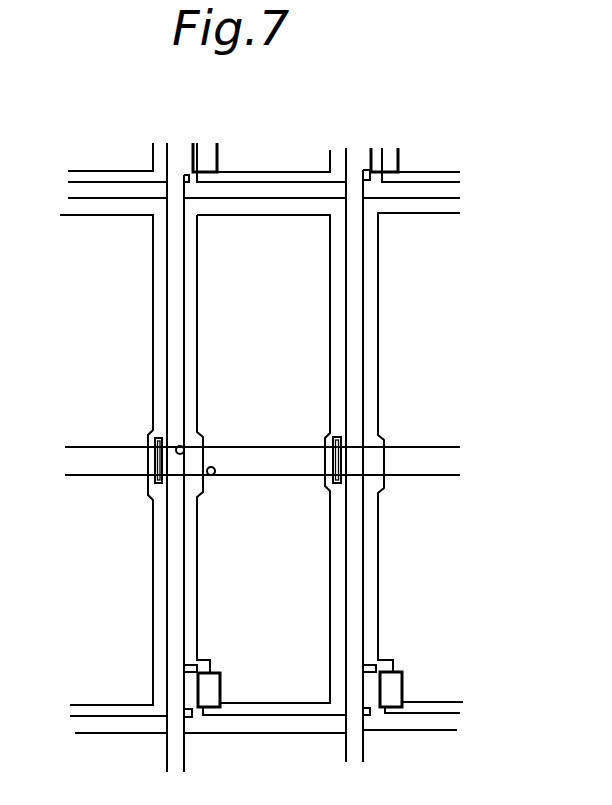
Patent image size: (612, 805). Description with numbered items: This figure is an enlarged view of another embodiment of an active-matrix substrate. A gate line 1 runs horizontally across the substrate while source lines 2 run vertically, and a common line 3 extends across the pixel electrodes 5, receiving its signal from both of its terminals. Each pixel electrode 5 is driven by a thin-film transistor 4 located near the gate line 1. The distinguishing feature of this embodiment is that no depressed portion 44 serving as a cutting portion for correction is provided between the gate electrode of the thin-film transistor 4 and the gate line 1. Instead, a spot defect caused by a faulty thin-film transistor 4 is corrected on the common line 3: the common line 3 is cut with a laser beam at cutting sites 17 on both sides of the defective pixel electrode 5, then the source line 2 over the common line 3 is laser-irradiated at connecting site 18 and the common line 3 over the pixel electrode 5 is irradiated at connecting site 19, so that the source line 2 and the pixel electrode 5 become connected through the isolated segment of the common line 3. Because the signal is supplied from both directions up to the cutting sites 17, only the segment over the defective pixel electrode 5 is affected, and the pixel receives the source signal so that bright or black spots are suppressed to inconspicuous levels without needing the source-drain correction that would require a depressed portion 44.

The gate line 1 is at (77, 722).
The source line 2 is at (182, 145).
The common line 3 is at (73, 463).
The thin-film transistor 4 is at (226, 666).
The pixel electrode 5 is at (318, 550).
The cutting site 17 is at (153, 460).
The connecting site 18 is at (183, 447).
The connecting site 19 is at (215, 471).
The depressed portion 44 is at (195, 663).